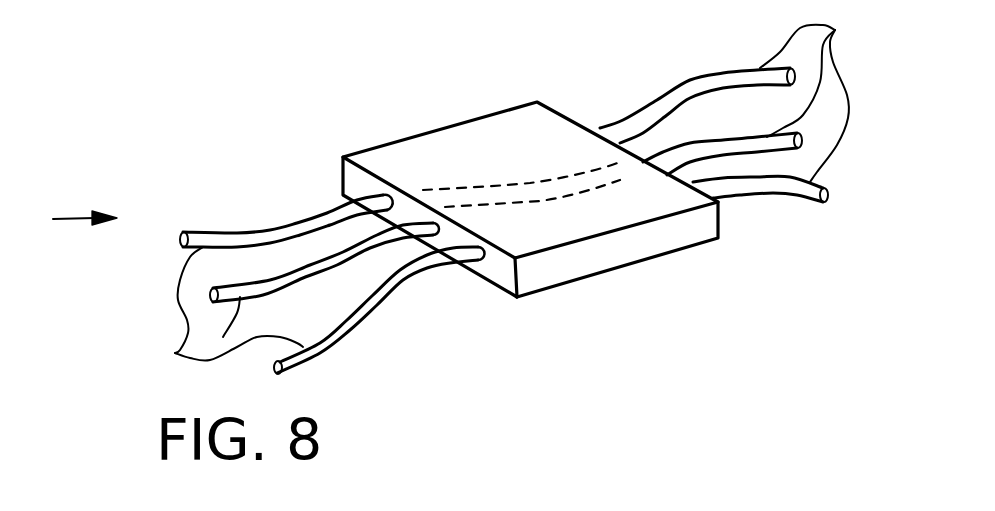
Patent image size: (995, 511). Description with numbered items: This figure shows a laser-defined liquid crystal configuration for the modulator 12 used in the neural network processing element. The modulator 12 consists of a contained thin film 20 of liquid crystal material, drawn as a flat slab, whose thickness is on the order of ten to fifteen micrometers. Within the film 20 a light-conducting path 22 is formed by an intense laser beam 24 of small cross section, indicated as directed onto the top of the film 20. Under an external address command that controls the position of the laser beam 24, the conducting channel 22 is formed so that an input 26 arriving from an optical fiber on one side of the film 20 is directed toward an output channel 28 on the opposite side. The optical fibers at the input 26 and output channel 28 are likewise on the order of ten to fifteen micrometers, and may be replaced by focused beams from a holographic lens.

The modulator 12 is at (270, 150).
The contained thin film 20 is at (667, 240).
The light-conducting path 22 is at (543, 187).
The laser beam 24 is at (408, 112).
The input 26 is at (299, 286).
The output channel 28 is at (750, 107).